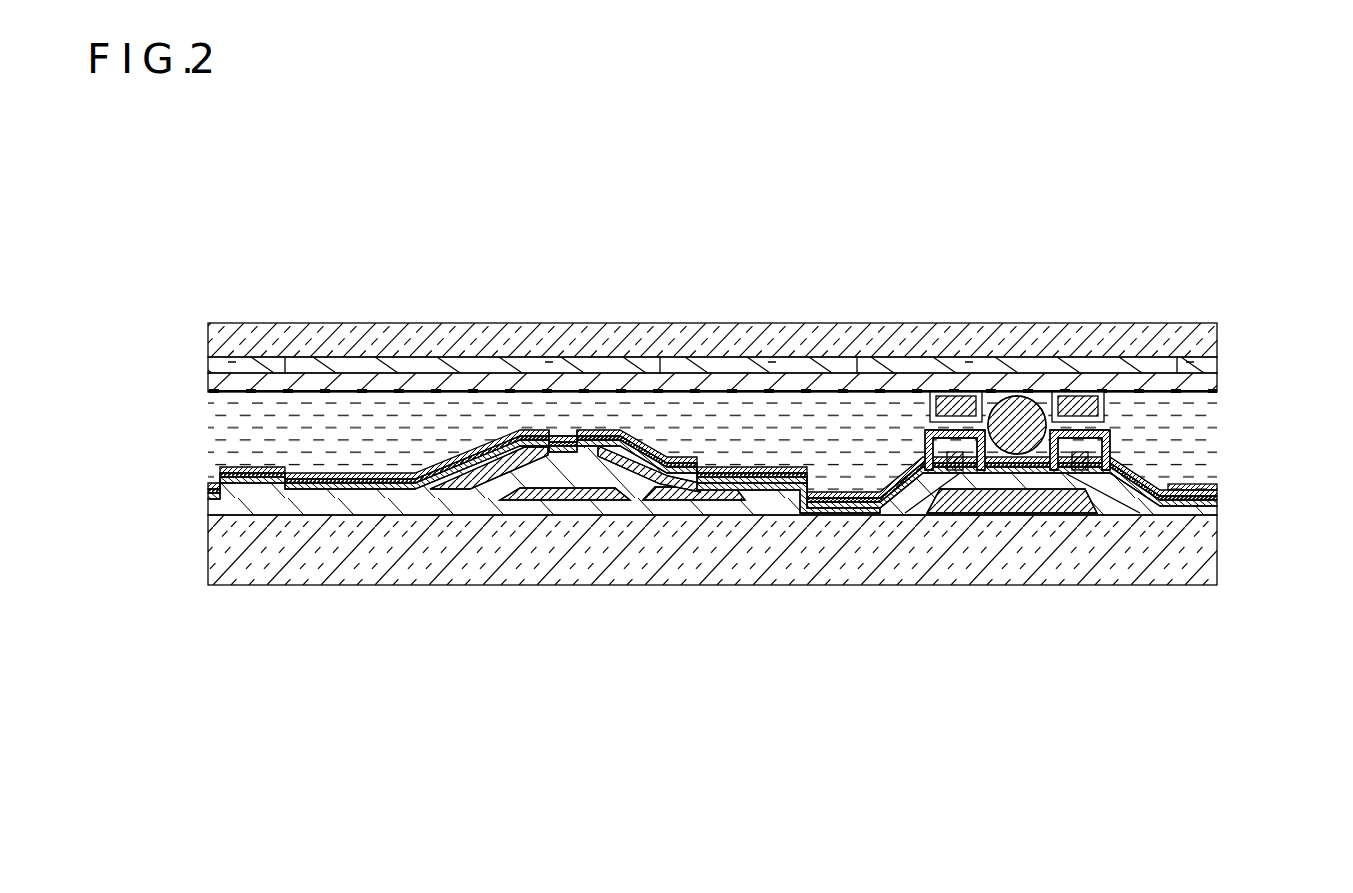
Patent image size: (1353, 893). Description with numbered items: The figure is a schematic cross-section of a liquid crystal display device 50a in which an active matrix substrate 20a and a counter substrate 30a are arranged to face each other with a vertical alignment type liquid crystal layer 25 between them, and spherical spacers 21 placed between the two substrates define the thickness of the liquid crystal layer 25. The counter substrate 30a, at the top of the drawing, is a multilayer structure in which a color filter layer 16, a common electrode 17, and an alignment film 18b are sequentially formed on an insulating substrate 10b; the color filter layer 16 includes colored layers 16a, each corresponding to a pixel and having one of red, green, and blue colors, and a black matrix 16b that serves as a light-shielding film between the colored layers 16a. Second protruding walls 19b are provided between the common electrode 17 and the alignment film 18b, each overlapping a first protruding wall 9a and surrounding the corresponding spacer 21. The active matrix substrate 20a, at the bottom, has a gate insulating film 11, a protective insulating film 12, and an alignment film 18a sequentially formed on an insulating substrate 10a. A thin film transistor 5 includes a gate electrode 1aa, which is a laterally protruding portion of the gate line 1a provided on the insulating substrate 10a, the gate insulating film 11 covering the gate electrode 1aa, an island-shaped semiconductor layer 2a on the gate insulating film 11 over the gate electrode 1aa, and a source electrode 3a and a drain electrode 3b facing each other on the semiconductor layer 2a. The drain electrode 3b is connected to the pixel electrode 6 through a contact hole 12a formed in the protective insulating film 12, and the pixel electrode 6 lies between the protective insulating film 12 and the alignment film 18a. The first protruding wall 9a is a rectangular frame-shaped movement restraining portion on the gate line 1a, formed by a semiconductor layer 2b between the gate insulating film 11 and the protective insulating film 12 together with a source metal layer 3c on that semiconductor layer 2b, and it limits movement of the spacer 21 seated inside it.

The liquid crystal display device 50a is at (365, 305).
The counter substrate 30a is at (197, 315).
The active matrix substrate 20a is at (197, 483).
The liquid crystal layer 25 is at (197, 393).
The insulating substrate 10b is at (1212, 345).
The insulating substrate 10a is at (1212, 556).
The common electrode 17 is at (1207, 380).
The alignment film 18b is at (1208, 392).
The alignment film 18a is at (1205, 486).
The color filter layer 16 is at (985, 255).
The colored layers 16a is at (240, 362).
The black matrix 16b is at (548, 372).
The second protruding walls 19b is at (1078, 405).
The spherical spacers 21 is at (1020, 450).
The thin film transistor 5 is at (562, 412).
The pixel electrode 6 is at (1210, 490).
The gate insulating film 11 is at (1210, 510).
The protective insulating film 12 is at (1210, 497).
The contact hole 12a is at (753, 485).
The gate line 1a is at (1075, 500).
The gate electrode 1aa is at (582, 505).
The semiconductor layer 2a is at (540, 462).
The semiconductor layer 2b is at (960, 470).
The source electrode 3a is at (485, 472).
The drain electrode 3b is at (650, 462).
The source metal layer 3c is at (943, 470).
The first protruding wall 9a is at (897, 640).